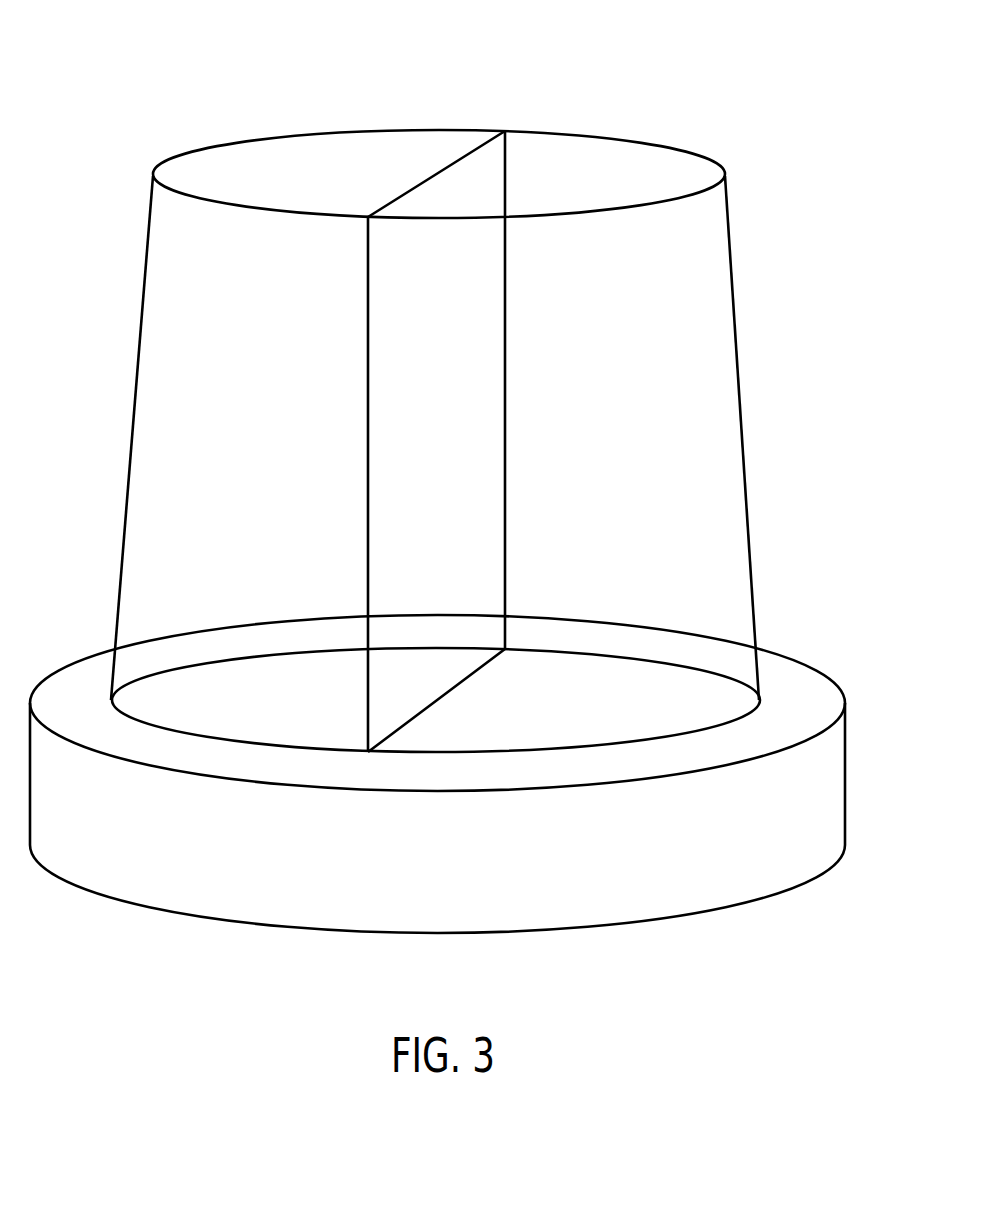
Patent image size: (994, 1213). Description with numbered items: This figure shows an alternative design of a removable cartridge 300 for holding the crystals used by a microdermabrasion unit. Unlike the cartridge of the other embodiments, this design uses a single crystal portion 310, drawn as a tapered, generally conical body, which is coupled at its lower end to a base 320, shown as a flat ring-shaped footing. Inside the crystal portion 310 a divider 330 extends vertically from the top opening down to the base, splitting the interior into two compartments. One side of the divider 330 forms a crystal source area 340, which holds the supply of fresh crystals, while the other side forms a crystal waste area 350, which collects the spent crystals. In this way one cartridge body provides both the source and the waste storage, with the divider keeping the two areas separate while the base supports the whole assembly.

The removable cartridge 300 is at (612, 58).
The crystal portion 310 is at (207, 147).
The base 320 is at (137, 900).
The divider 330 is at (507, 430).
The crystal source area 340 is at (283, 506).
The crystal waste area 350 is at (608, 522).